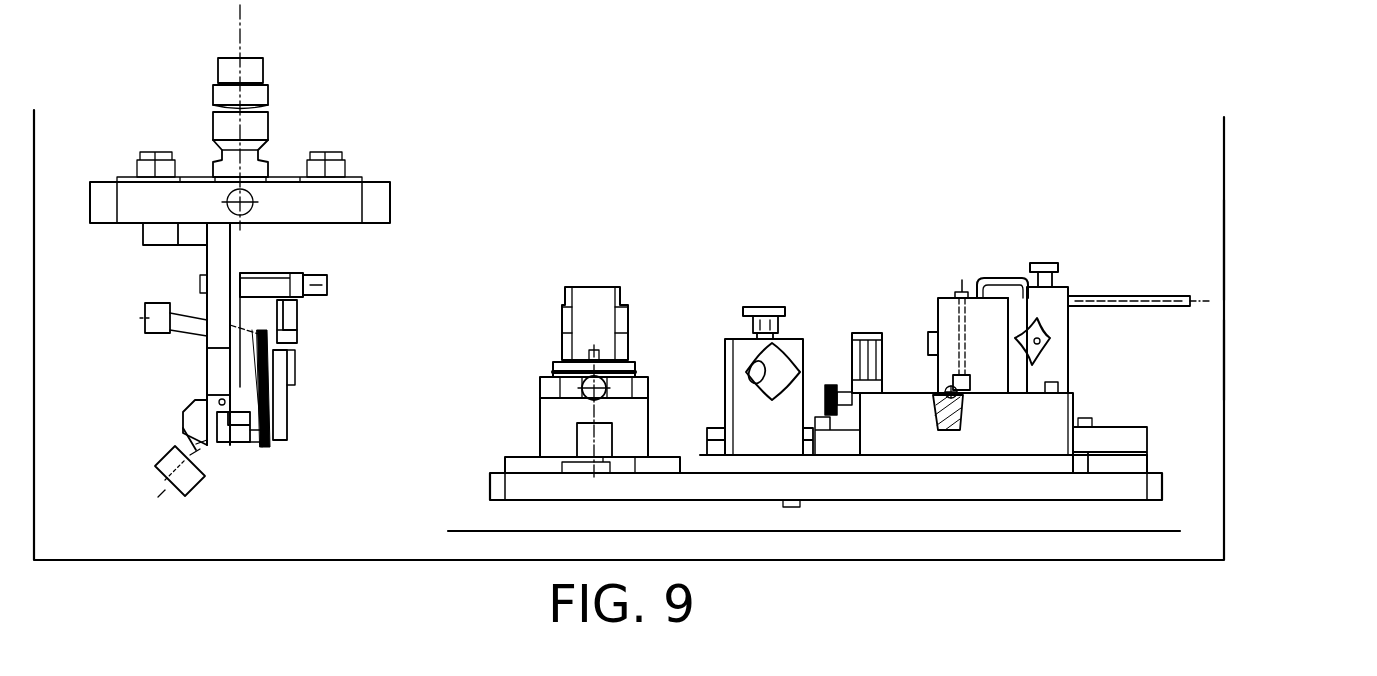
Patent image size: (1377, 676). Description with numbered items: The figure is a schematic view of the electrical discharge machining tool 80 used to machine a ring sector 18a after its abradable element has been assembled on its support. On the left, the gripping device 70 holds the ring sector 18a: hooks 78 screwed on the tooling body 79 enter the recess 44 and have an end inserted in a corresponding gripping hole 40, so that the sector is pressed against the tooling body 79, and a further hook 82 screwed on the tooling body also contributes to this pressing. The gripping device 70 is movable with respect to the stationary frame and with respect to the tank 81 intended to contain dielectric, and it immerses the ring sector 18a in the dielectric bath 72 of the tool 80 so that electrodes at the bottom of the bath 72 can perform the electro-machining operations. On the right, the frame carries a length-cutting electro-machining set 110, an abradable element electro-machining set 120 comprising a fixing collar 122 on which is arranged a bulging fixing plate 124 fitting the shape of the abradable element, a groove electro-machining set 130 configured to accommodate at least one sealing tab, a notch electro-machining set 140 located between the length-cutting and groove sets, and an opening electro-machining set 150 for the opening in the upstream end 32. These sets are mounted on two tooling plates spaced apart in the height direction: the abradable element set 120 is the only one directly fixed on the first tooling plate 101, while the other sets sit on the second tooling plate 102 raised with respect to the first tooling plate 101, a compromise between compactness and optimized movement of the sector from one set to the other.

The electrical discharge machining tool 80 is at (1262, 166).
The dielectric bath 72 is at (1207, 248).
The tank 81 is at (1222, 337).
The gripping device 70 is at (175, 300).
The hook 82 is at (300, 277).
The upstream end 32 is at (295, 335).
The recess 44 is at (298, 373).
The ring sector 18a is at (293, 380).
The gripping hole 40 is at (290, 420).
The tooling body 79 is at (220, 375).
The hook 78 is at (183, 428).
The abradable element electro-machining set 120 is at (633, 295).
The bulging fixing plate 124 is at (583, 368).
The fixing collar 122 is at (550, 415).
The length-cutting electro-machining set 110 is at (800, 320).
The notch electro-machining set 140 is at (872, 338).
The groove electro-machining set 130 is at (970, 285).
The opening electro-machining set 150 is at (1085, 285).
The second tooling plate 102 is at (975, 466).
The first tooling plate 101 is at (1128, 489).